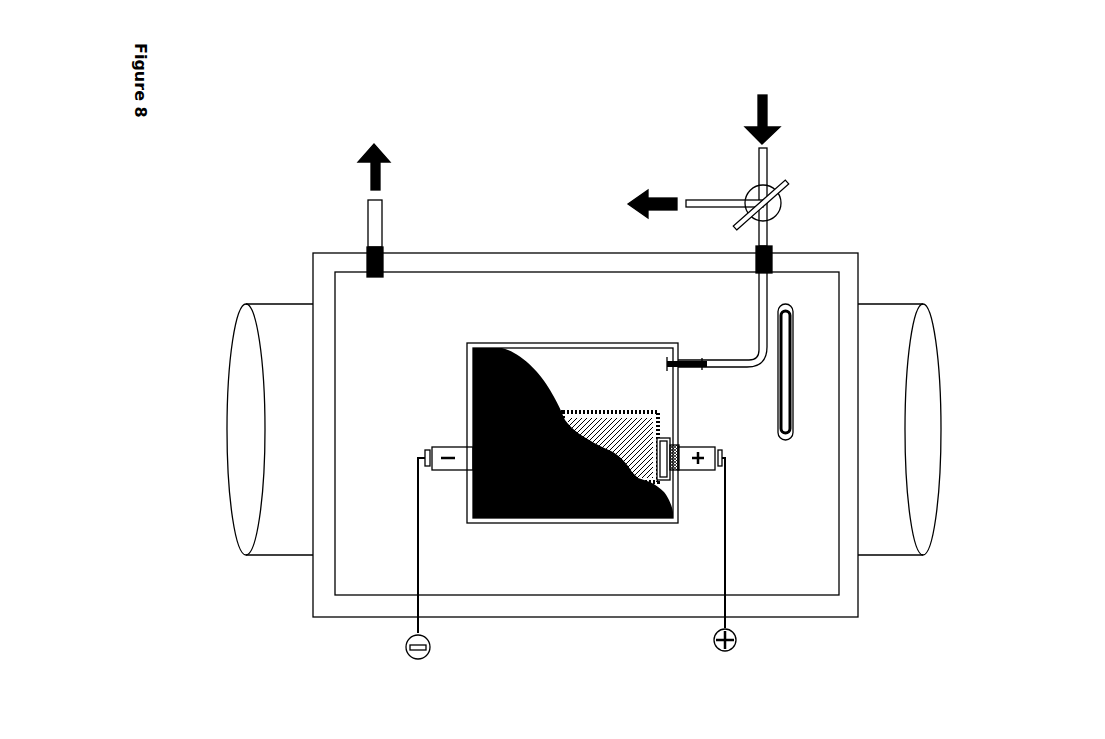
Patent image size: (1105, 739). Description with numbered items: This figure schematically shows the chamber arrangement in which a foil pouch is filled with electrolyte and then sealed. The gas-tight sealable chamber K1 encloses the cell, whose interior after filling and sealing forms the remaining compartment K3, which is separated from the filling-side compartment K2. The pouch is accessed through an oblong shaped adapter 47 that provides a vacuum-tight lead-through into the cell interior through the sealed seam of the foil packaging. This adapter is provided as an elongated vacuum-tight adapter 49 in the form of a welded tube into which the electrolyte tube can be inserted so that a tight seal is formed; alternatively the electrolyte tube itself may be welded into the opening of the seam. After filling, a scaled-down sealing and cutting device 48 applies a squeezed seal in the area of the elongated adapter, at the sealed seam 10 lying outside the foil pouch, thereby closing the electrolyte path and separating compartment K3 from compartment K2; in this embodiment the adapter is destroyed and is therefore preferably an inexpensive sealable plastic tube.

The sealed seam 10 is at (573, 367).
The oblong shaped adapter 47 is at (670, 360).
The scaled-down sealing and cutting device 48 is at (777, 327).
The elongated vacuum-tight adapter 49 is at (720, 365).
The gas-tight sealable chamber K1 is at (585, 435).
The compartment K2 is at (723, 360).
The remaining compartment K3 is at (623, 389).